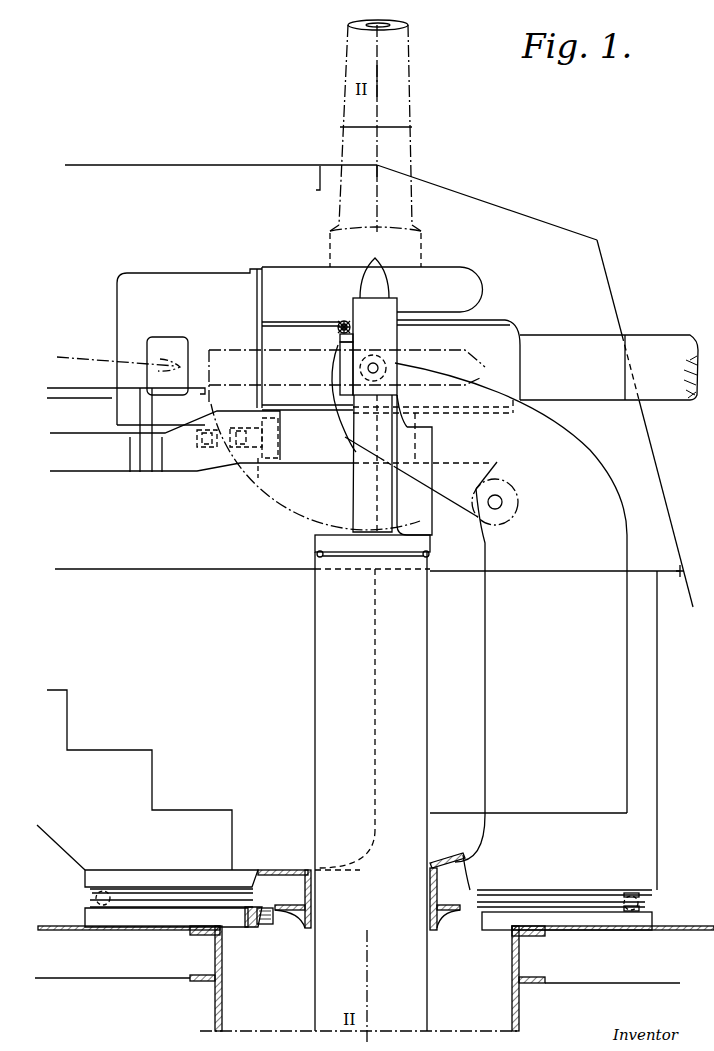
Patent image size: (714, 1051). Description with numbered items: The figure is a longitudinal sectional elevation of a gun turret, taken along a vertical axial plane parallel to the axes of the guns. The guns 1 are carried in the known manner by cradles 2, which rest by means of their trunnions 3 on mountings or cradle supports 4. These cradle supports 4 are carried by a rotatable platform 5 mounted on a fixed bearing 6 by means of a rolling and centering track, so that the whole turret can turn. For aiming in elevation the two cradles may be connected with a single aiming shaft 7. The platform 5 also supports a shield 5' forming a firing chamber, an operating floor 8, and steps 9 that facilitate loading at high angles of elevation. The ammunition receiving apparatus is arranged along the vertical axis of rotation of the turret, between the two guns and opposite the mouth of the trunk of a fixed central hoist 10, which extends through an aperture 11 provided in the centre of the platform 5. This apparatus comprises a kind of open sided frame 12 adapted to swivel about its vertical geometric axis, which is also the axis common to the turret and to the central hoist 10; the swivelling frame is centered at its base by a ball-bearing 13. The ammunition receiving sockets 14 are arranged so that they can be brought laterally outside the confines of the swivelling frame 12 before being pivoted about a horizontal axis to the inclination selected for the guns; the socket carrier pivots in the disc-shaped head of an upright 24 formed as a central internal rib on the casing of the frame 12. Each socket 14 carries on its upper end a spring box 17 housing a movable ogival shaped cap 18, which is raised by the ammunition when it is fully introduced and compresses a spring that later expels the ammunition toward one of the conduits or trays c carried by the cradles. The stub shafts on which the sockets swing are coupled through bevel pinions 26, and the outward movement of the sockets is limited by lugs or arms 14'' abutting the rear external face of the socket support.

The guns 1 is at (655, 345).
The cradles 2 is at (500, 323).
The trunnions 3 is at (386, 368).
The cradle supports 4 is at (594, 462).
The rotatable platform 5 is at (551, 689).
The shield 5' is at (379, 373).
The fixed bearing 6 is at (646, 923).
The aiming shaft 7 is at (503, 502).
The operating floor 8 is at (186, 568).
The steps 9 is at (154, 770).
The fixed central hoist 10 is at (323, 674).
The aperture 11 is at (303, 930).
The open sided frame 12 is at (428, 478).
The ball-bearing 13 is at (316, 554).
The ammunition receiving sockets 14 is at (355, 438).
The lugs or arms 14'' is at (347, 440).
The spring box 17 is at (392, 312).
The ogival shaped cap 18 is at (379, 267).
The upright 24 is at (403, 449).
The bevel pinions 26 is at (341, 322).
The conduits or trays c is at (93, 388).